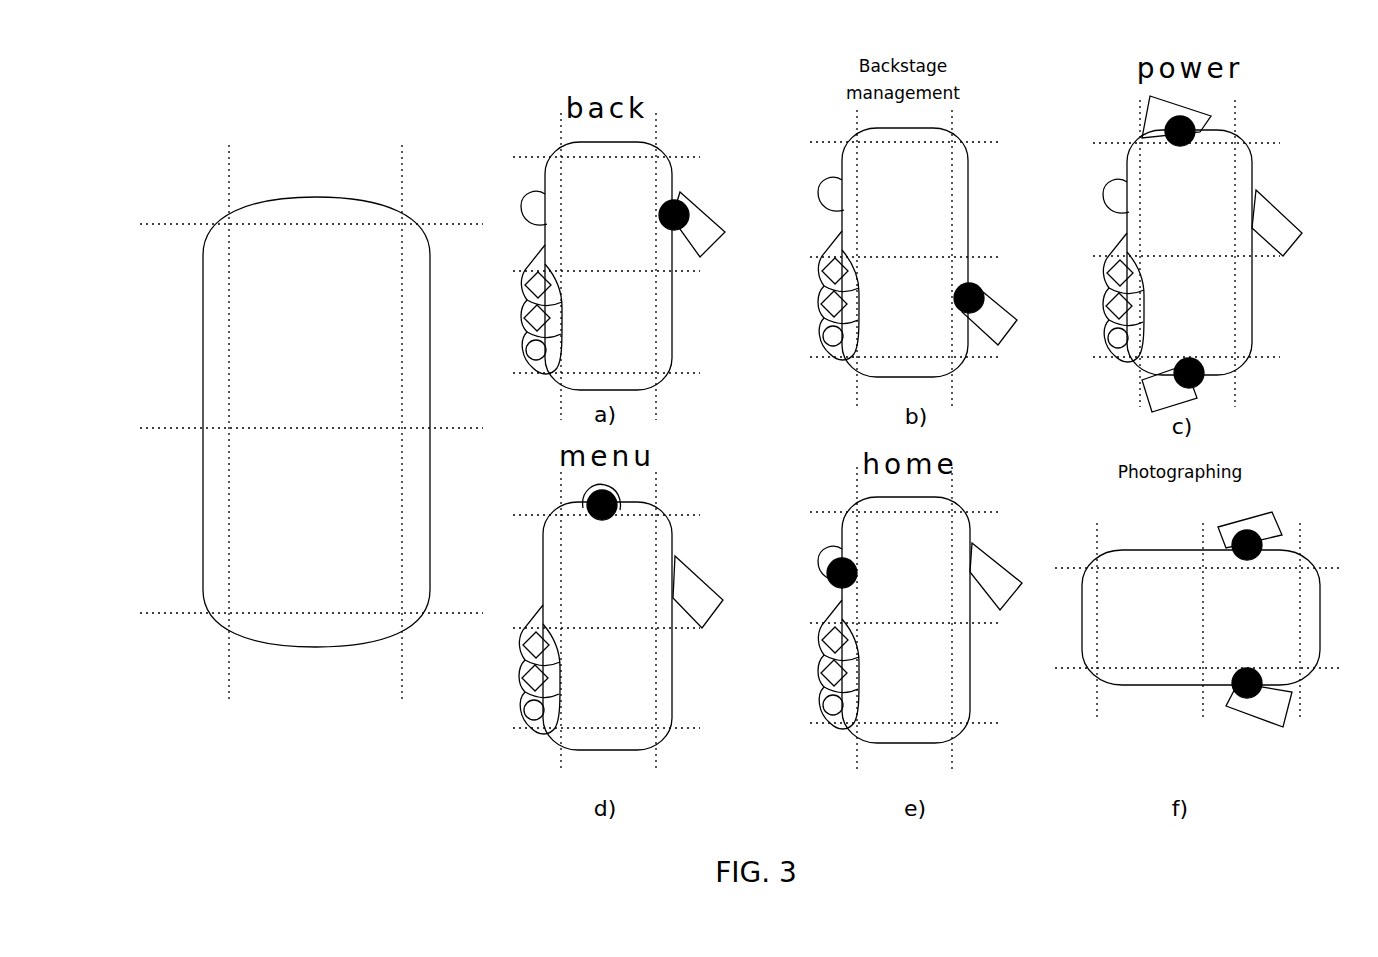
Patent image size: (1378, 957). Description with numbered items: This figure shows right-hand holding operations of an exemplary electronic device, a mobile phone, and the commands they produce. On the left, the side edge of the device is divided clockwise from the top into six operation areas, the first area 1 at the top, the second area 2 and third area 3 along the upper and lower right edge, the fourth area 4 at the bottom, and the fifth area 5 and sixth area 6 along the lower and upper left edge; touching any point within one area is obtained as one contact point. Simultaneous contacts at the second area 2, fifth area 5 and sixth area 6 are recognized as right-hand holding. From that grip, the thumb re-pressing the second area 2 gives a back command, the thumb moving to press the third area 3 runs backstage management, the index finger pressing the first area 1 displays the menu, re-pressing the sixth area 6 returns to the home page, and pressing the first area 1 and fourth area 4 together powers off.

The first area 1 is at (316, 205).
The second area 2 is at (452, 341).
The third area 3 is at (452, 509).
The fourth area 4 is at (316, 639).
The fifth area 5 is at (178, 509).
The sixth area 6 is at (177, 341).